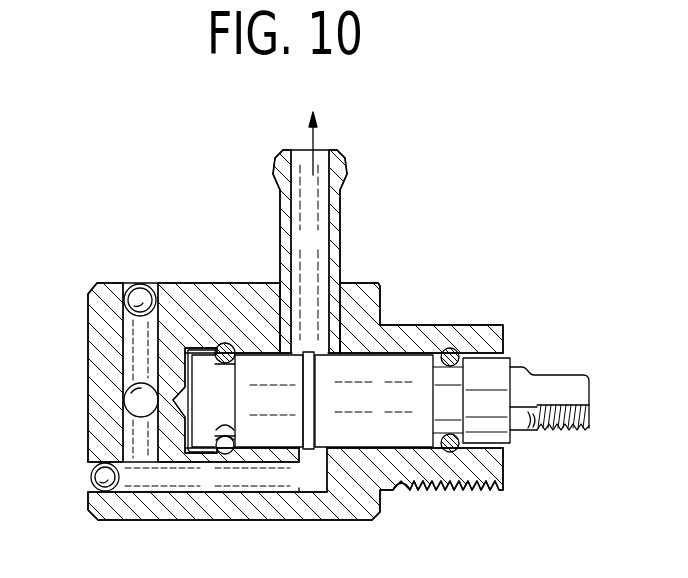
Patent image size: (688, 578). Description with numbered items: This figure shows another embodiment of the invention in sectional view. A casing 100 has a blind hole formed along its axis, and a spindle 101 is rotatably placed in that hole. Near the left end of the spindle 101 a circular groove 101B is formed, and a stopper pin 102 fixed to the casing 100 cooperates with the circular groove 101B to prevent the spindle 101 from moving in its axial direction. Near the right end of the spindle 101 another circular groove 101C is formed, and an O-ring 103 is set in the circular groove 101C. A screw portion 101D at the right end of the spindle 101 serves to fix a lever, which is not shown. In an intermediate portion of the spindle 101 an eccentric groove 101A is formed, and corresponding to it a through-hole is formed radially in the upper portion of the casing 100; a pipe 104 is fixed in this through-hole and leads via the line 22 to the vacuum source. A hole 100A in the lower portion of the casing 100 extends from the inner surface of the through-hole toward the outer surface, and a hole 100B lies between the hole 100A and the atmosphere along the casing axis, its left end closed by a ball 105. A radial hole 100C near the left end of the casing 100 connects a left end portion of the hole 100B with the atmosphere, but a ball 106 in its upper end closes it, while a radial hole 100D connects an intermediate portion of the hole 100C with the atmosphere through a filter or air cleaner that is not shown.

The line 22 is at (315, 131).
The casing 100 is at (378, 285).
The hole 100A is at (318, 478).
The hole 100B is at (247, 480).
The hole 100C is at (143, 340).
The hole 100D is at (140, 402).
The spindle 101 is at (390, 382).
The eccentric groove 101A is at (306, 361).
The circular groove 101B is at (223, 416).
The circular groove 101C is at (466, 377).
The screw portion 101D is at (557, 433).
The stopper pin 102 is at (226, 345).
The O-ring 103 is at (450, 349).
The pipe 104 is at (342, 204).
The ball 105 is at (103, 476).
The ball 106 is at (139, 296).